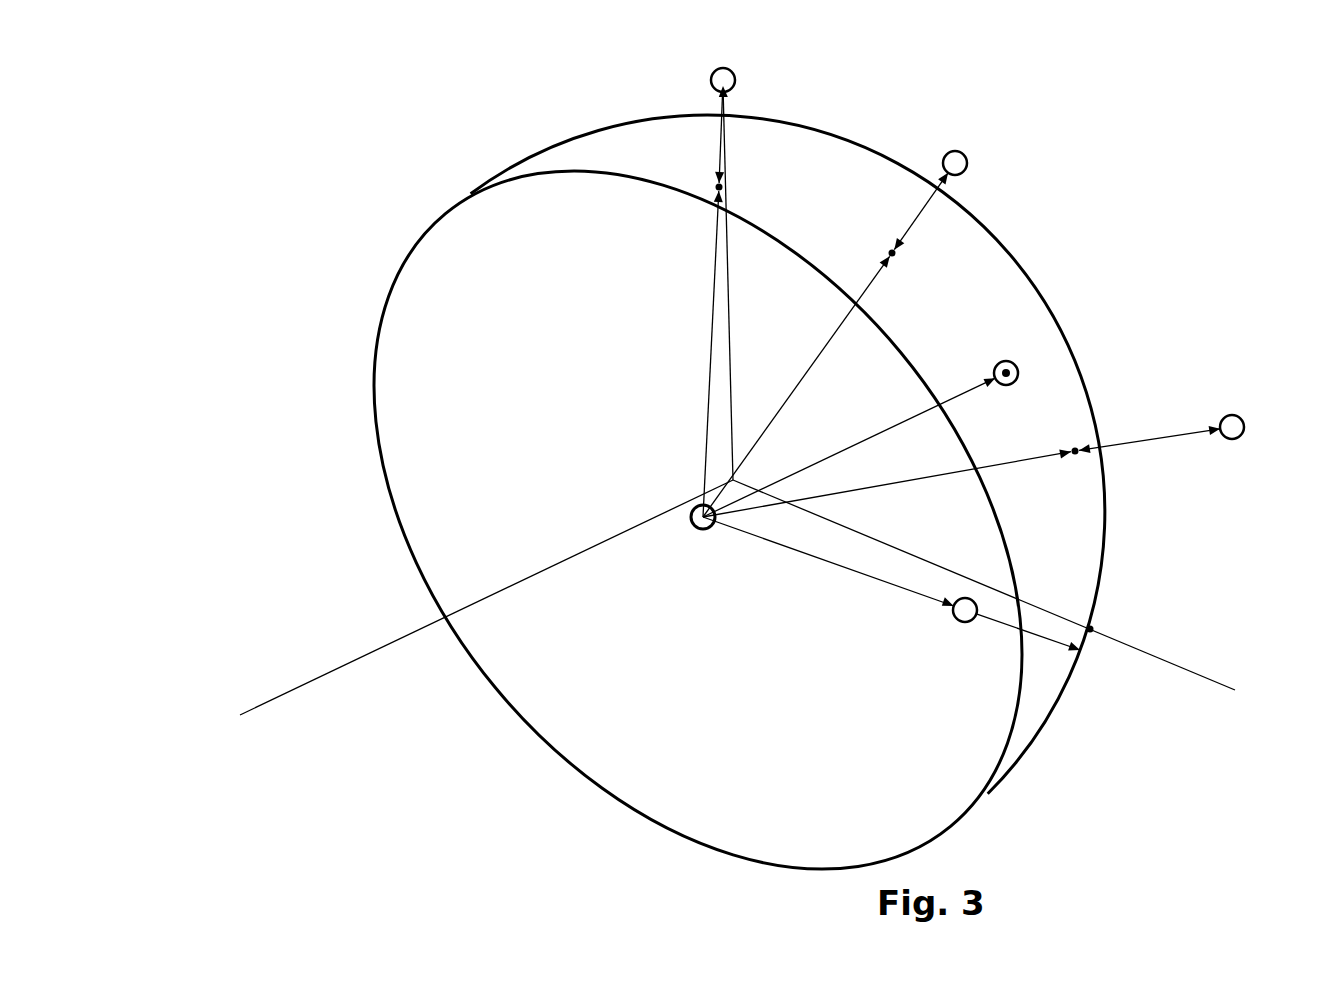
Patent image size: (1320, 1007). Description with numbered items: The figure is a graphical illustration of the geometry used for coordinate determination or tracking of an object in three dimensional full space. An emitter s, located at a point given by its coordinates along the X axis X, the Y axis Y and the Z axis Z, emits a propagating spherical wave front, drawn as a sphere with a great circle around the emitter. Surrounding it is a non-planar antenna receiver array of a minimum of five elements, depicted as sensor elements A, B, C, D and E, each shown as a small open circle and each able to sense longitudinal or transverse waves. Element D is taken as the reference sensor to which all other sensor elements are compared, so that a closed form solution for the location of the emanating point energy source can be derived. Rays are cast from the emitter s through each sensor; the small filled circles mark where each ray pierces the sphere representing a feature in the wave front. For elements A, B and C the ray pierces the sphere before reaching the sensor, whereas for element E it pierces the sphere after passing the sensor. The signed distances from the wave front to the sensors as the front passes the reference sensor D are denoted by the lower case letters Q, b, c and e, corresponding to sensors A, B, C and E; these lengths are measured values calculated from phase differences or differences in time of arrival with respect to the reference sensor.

The emitter s is at (697, 529).
The antenna element A is at (1168, 426).
The antenna element B is at (729, 117).
The antenna element C is at (930, 188).
The reference sensor D is at (860, 428).
The antenna element E is at (840, 581).
The distance from wave front to sensor A Q is at (943, 478).
The distance from wave front to sensor B b is at (709, 330).
The distance from wave front to sensor C c is at (818, 364).
The distance from wave front to sensor E e is at (1028, 632).
The X coordinate axis X is at (995, 590).
The Y coordinate axis Y is at (734, 283).
The Z coordinate axis Z is at (470, 603).